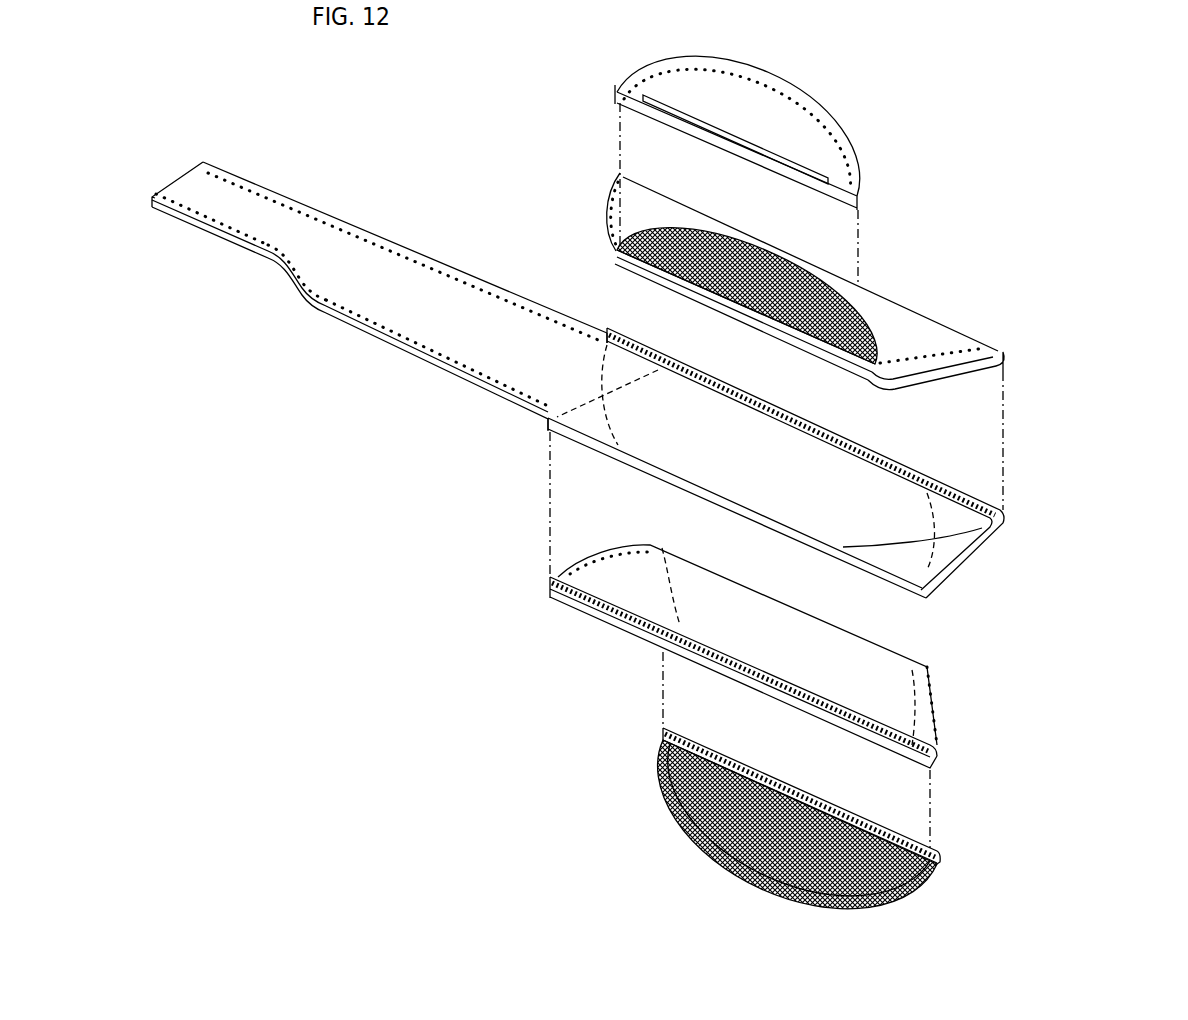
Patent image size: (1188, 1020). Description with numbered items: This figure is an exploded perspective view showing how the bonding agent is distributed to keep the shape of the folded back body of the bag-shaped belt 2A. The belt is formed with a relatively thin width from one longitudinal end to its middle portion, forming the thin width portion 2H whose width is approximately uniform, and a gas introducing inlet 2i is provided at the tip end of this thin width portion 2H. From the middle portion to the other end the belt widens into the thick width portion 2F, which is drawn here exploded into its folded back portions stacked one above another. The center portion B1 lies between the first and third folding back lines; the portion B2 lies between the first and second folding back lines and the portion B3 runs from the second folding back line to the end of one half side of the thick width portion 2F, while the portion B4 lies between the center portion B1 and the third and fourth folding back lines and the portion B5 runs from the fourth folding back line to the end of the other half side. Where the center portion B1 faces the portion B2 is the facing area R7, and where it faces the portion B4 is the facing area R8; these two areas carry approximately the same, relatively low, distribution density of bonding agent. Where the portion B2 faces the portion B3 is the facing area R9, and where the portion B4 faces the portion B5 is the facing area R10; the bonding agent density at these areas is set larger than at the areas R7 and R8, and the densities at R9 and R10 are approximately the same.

The bag-shaped belt 2A is at (379, 266).
The gas introducing inlet 2i is at (177, 179).
The thin width portion 2H is at (385, 302).
The thick width portion 2F is at (1075, 912).
The center portion B1 is at (809, 470).
The portion B2 is at (748, 281).
The portion B3 is at (596, 60).
The portion B4 is at (800, 656).
The portion B5 is at (845, 826).
The facing area R7 is at (807, 455).
The facing area R8 is at (768, 598).
The facing area R9 is at (812, 260).
The facing area R10 is at (790, 797).